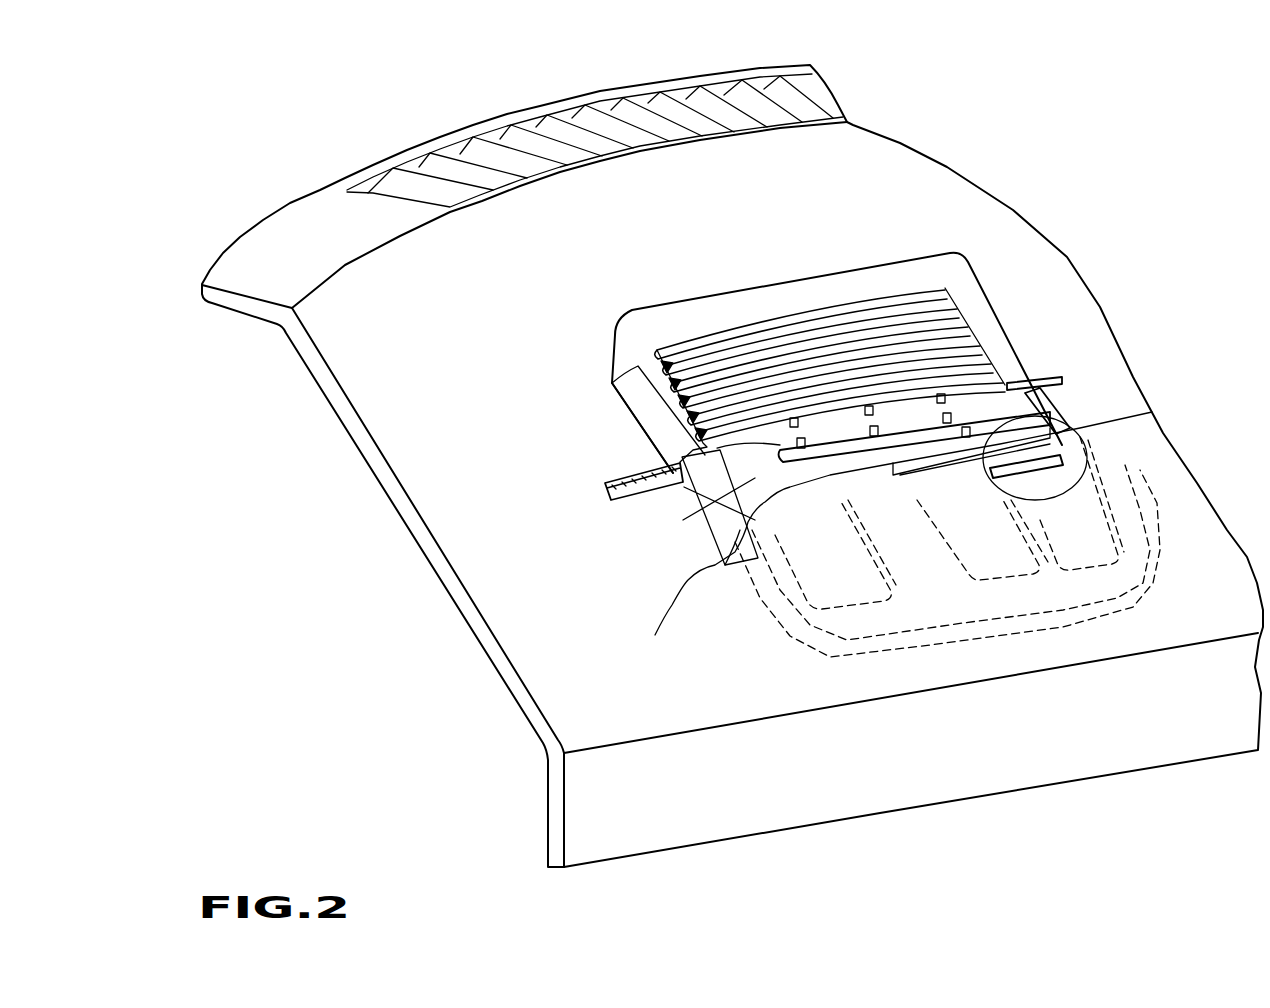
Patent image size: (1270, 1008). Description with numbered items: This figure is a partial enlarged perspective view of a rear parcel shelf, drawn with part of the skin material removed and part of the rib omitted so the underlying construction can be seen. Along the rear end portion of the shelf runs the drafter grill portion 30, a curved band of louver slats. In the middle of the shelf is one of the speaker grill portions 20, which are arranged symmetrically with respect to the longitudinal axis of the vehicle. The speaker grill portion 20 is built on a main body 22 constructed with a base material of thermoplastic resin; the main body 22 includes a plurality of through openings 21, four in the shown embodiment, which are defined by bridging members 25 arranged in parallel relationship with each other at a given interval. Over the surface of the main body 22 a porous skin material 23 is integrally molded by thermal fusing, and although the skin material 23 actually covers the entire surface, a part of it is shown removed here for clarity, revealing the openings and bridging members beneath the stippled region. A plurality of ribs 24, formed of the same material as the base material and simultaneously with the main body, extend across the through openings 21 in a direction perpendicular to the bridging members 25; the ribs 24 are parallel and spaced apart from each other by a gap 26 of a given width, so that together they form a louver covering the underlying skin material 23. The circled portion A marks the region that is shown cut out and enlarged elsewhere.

The speaker grill portion 20 is at (768, 266).
The through openings 21 is at (717, 530).
The main body 22 is at (720, 530).
The porous skin material 23 is at (1107, 430).
The ribs 24 is at (723, 350).
The bridging members 25 is at (1000, 418).
The gap 26 is at (670, 390).
The drafter grill portion 30 is at (492, 203).
The portion A is at (1085, 454).